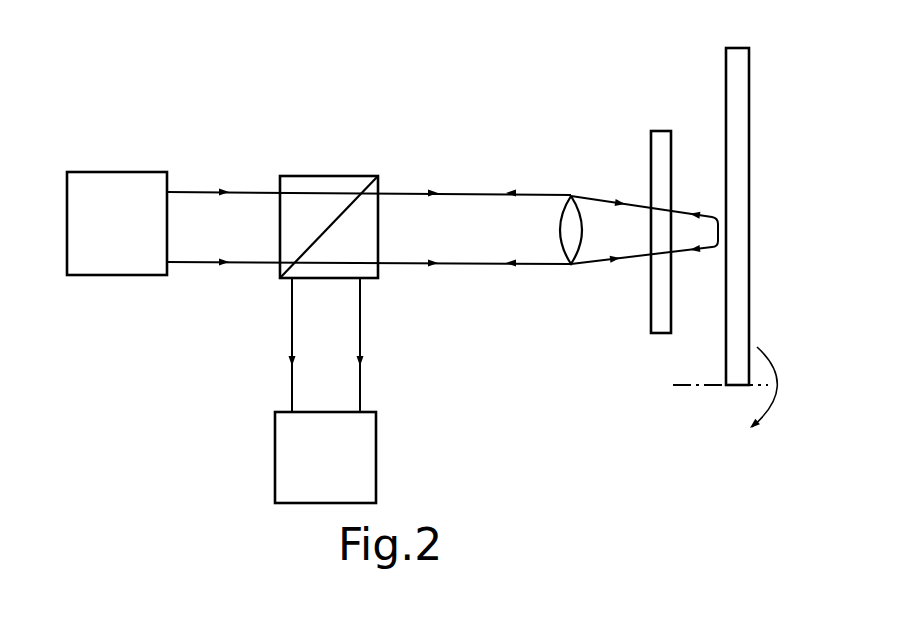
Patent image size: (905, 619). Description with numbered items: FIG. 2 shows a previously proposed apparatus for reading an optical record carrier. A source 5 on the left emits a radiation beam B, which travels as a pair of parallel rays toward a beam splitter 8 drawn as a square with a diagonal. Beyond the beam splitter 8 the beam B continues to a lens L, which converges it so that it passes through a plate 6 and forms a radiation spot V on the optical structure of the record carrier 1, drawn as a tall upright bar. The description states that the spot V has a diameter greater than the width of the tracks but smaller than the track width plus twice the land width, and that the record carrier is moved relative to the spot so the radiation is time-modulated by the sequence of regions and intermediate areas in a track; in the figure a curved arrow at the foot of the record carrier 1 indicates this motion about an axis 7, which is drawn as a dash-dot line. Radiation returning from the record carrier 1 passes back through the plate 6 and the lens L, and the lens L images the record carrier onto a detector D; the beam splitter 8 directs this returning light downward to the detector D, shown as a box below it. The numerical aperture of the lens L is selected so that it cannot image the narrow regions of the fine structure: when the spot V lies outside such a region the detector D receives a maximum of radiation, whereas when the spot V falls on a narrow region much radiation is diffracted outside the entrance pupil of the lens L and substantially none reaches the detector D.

The rotatable measuring bar / object 1 is at (737, 55).
The light source 5 is at (126, 179).
The plate 6 is at (661, 133).
The axis of rotation 7 is at (682, 388).
The beam splitter 8 is at (328, 181).
The light beam B is at (463, 193).
The detector D is at (315, 465).
The lens L is at (570, 248).
The radiation spot V is at (644, 251).